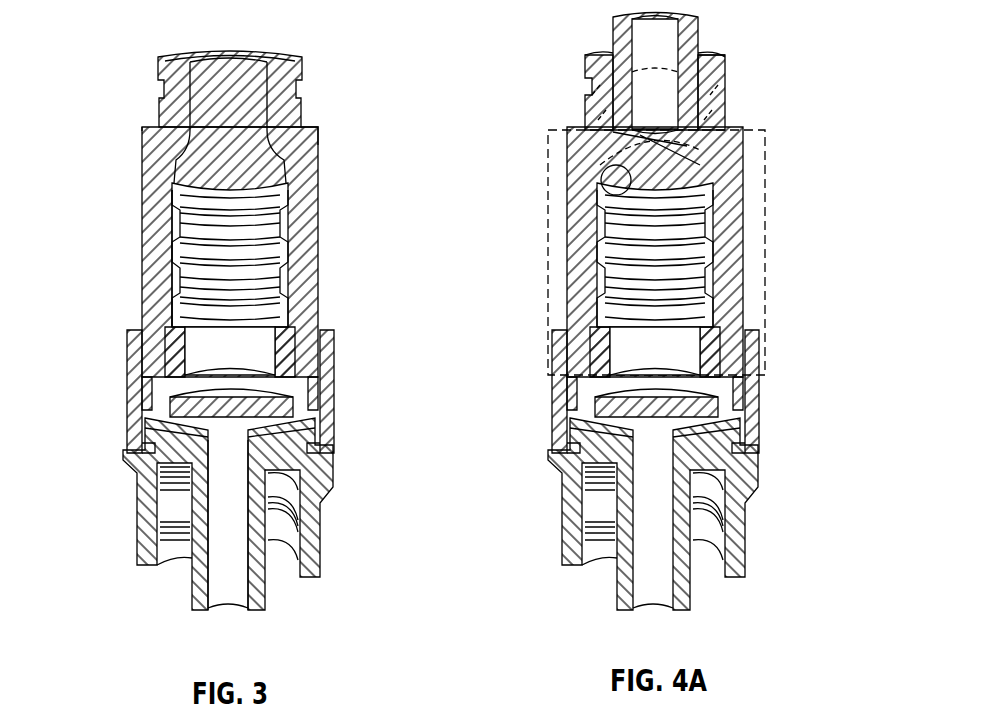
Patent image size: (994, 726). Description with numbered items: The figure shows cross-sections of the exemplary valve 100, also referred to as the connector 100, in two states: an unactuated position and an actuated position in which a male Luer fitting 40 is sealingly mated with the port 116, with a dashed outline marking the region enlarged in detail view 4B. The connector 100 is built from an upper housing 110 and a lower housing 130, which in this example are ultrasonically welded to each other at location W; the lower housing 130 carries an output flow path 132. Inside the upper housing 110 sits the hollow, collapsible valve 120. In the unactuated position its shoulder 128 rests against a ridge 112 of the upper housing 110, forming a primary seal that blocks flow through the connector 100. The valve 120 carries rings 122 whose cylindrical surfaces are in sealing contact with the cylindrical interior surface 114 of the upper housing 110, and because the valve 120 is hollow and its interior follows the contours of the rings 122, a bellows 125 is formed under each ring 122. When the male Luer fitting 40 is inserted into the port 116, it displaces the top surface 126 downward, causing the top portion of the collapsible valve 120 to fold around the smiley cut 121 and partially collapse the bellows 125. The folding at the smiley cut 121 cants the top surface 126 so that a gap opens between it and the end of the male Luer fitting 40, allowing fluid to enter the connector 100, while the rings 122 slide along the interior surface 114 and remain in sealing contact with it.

In FIG. 3, the valve 100 is at (152, 28).
In FIG. 3, the port 116 is at (268, 42).
In FIG. 4A, the port 116 is at (604, 42).
In FIG. 3, the upper housing 110 is at (163, 115).
In FIG. 4A, the upper housing 110 is at (597, 75).
In FIG. 3, the ridge 112 is at (172, 172).
In FIG. 3, the shoulder 128 is at (311, 142).
In FIG. 3, the rings 122 is at (168, 248).
In FIG. 4A, the rings 122 is at (655, 258).
In FIG. 3, the cylindrical interior surface 114 is at (163, 285).
In FIG. 3, the bellows 125 is at (315, 240).
In FIG. 4A, the bellows 125 is at (745, 240).
In FIG. 3, the valve 120 is at (313, 360).
In FIG. 4A, the valve 120 is at (600, 285).
In FIG. 3, the location W is at (131, 444).
In FIG. 3, the lower housing 130 is at (140, 528).
In FIG. 4A, the lower housing 130 is at (653, 514).
In FIG. 3, the output flow path 132 is at (228, 606).
In FIG. 4A, the male Luer fitting 40 is at (712, 68).
In FIG. 4A, the detail view 4B is at (757, 130).
In FIG. 4A, the top surface 126 is at (738, 168).
In FIG. 4A, the smiley cut 121 is at (606, 190).